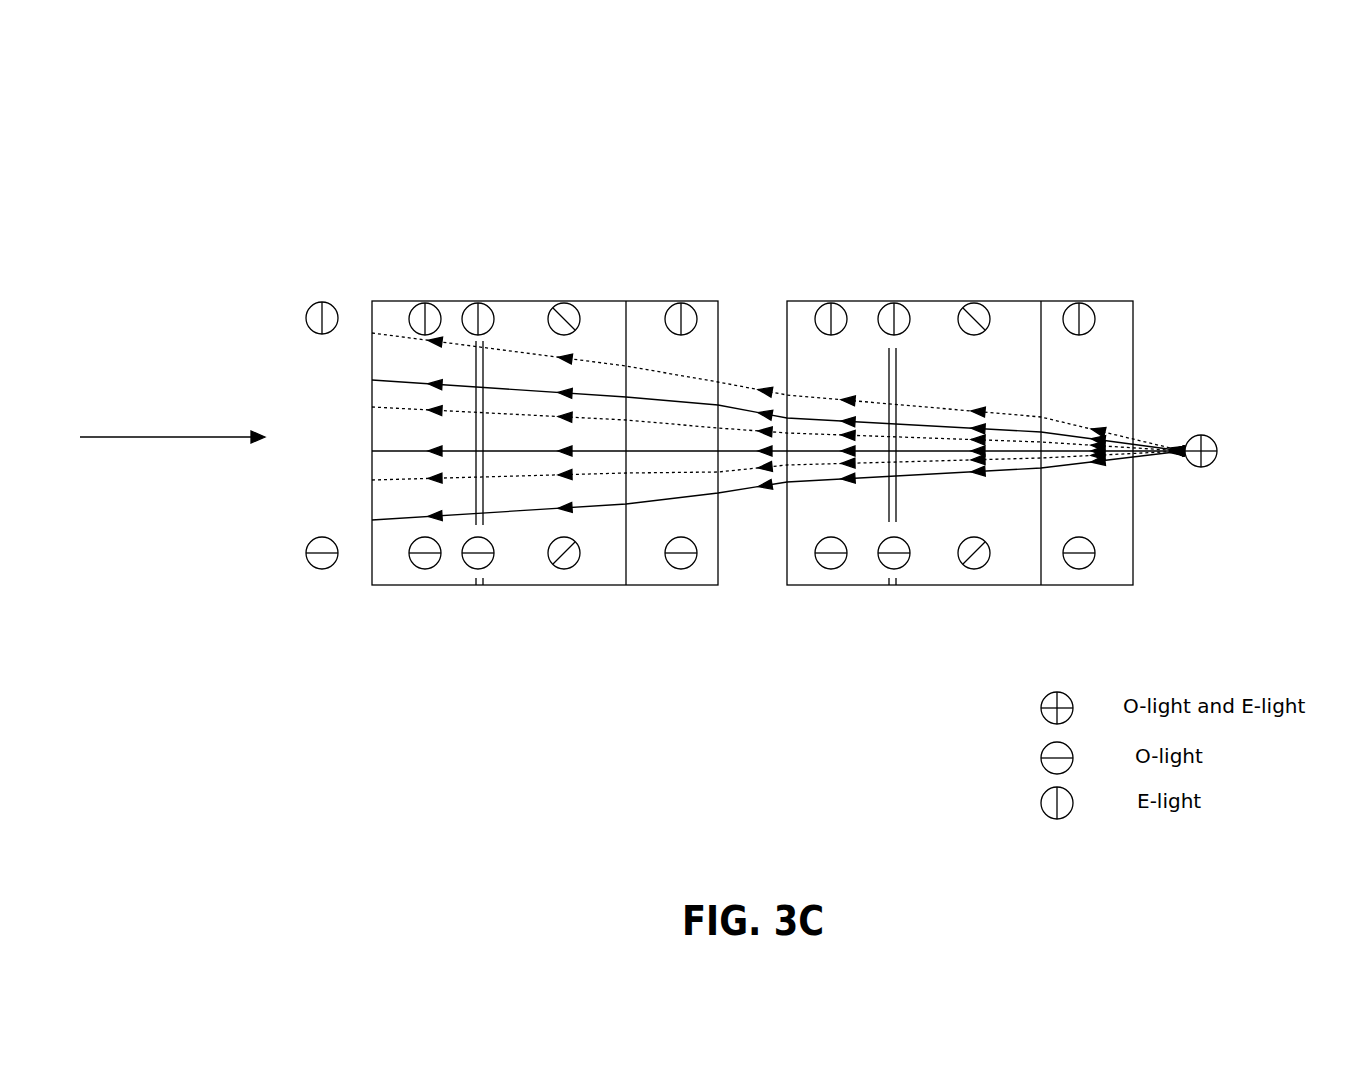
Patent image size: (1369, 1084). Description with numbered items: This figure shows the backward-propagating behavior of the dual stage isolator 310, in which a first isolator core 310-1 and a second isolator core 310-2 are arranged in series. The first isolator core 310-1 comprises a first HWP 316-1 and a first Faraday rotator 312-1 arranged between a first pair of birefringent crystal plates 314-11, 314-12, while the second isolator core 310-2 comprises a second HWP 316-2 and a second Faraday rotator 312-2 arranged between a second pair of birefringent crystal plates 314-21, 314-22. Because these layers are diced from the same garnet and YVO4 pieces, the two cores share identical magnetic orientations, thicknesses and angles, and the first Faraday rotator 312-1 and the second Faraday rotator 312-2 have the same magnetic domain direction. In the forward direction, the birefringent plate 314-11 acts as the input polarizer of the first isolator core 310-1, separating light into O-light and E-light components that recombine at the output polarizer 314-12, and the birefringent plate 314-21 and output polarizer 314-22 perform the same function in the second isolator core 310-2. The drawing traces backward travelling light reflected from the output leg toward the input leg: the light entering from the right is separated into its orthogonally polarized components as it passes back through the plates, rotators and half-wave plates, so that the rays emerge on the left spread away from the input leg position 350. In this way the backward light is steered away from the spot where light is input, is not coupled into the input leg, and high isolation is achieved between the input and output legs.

The dual stage isolator 310 is at (238, 88).
The first isolator core 310-1 is at (372, 167).
The second isolator core 310-2 is at (787, 167).
The birefringent crystal plate 314-11 is at (425, 300).
The first Faraday rotator 312-1 is at (558, 300).
The birefringent crystal plate 314-12 is at (675, 300).
The first HWP 316-1 is at (478, 695).
The birefringent crystal plate 314-21 is at (828, 300).
The second Faraday rotator 312-2 is at (973, 300).
The birefringent crystal plate 314-22 is at (1078, 300).
The second HWP 316-2 is at (901, 697).
The input leg position 350 is at (209, 435).